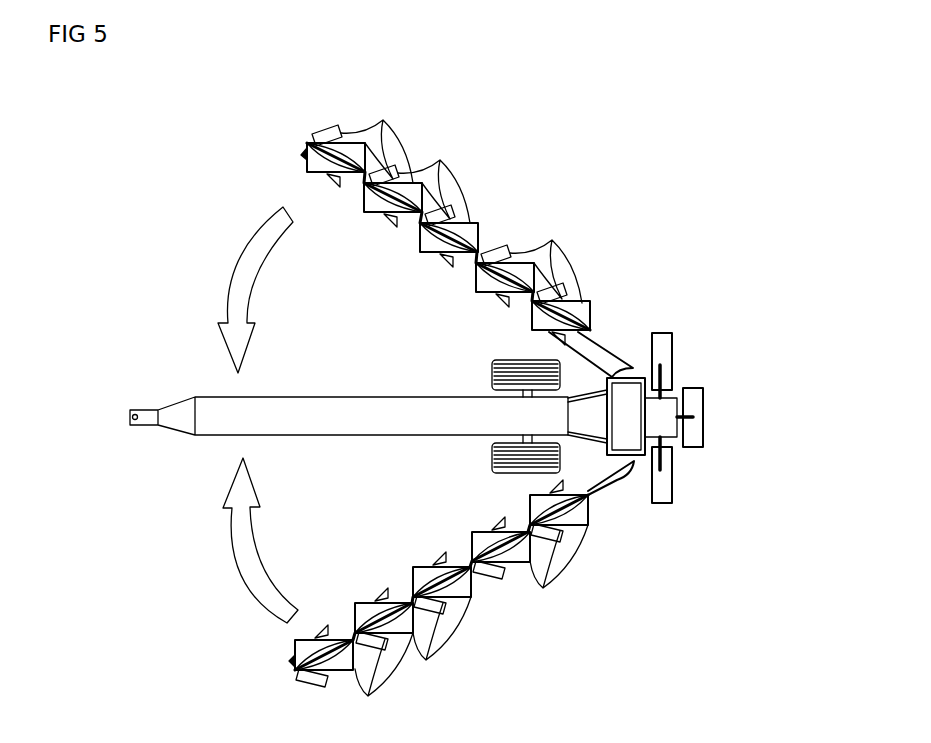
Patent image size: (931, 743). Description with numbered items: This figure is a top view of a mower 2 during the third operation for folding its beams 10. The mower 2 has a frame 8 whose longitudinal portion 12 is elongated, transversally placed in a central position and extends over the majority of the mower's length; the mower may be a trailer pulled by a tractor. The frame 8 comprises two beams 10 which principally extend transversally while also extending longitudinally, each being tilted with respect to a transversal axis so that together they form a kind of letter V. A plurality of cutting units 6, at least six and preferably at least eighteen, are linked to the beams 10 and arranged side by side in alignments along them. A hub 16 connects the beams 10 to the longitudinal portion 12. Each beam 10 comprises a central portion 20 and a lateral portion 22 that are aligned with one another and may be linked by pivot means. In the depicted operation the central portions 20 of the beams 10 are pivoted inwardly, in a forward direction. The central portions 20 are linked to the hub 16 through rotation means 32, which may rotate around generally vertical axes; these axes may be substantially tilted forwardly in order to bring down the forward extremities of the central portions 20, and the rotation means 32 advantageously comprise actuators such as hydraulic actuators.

The mower 2 is at (682, 239).
The cutting unit 6 is at (384, 120).
The frame 8 is at (359, 366).
The beam 10 is at (533, 173).
The longitudinal portion 12 is at (362, 420).
The hub 16 is at (615, 408).
The central portion 20 is at (341, 188).
The lateral portion 22 is at (592, 345).
The rotation means 32 is at (654, 362).